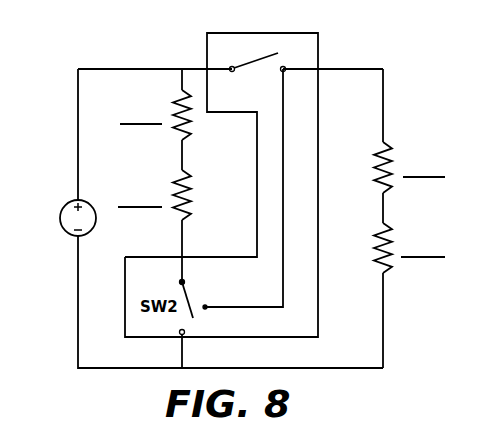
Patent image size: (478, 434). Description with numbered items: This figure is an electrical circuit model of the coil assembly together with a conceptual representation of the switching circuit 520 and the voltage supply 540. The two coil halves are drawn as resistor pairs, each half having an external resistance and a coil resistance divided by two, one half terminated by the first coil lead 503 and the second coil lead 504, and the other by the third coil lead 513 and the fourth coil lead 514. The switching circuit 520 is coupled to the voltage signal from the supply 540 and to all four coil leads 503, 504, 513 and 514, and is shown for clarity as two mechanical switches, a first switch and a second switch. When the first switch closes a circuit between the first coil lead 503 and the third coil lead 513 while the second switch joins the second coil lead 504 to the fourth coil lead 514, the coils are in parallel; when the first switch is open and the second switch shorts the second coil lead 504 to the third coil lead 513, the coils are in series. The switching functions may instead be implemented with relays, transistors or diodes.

The first coil lead 503 is at (181, 83).
The second coil lead 504 is at (182, 236).
The third coil lead 513 is at (383, 112).
The fourth coil lead 514 is at (383, 342).
The switching circuit 520 is at (318, 50).
The supply 540 is at (66, 231).